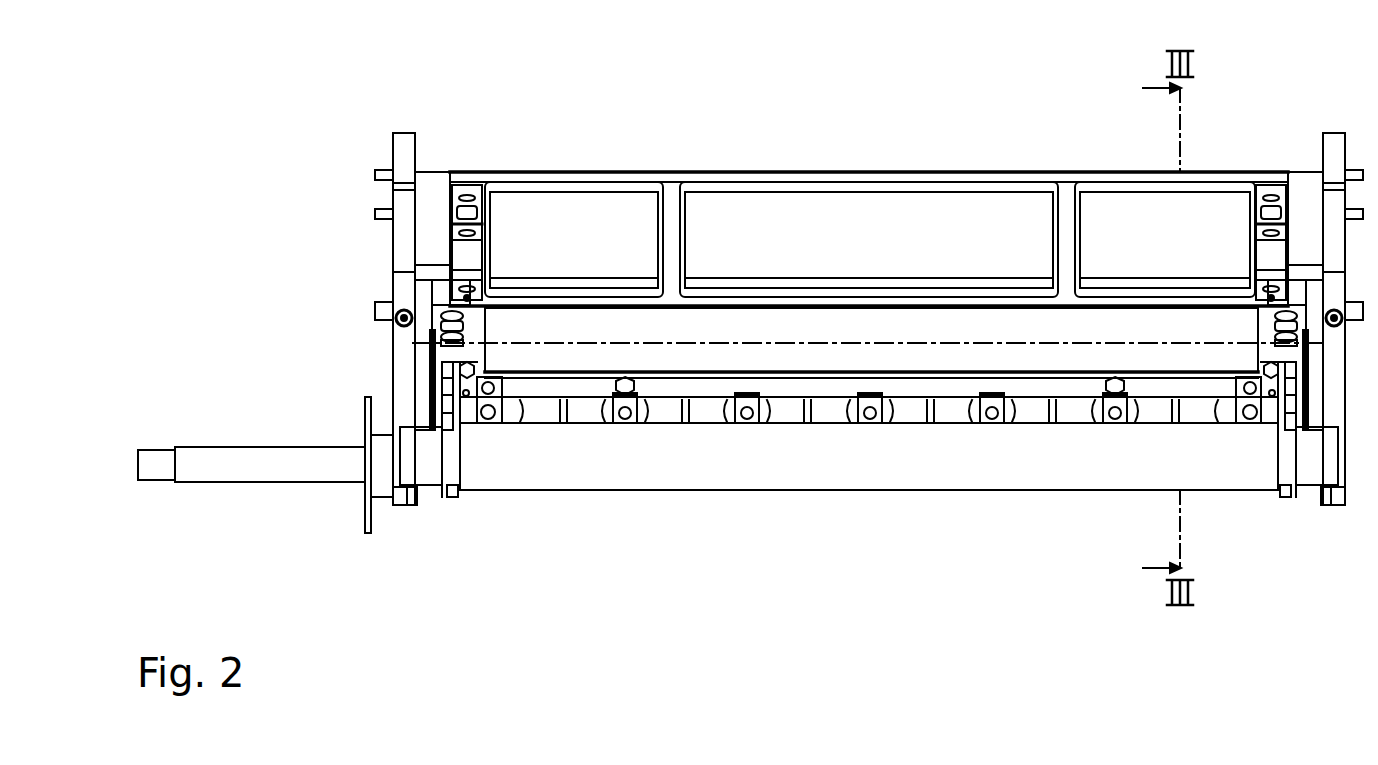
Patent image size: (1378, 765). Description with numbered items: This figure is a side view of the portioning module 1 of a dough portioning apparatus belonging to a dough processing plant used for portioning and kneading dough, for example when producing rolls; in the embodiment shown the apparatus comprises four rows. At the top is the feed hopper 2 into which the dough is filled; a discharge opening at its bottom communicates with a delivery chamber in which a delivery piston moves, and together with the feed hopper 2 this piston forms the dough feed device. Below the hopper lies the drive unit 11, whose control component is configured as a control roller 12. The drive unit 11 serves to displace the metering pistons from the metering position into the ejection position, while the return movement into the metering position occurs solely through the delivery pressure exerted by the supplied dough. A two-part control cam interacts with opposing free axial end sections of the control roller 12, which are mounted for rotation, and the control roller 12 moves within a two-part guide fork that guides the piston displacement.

The portioning module 1 is at (976, 116).
The feed hopper 2 is at (838, 175).
The drive unit 11 is at (667, 503).
The control roller 12 is at (937, 482).